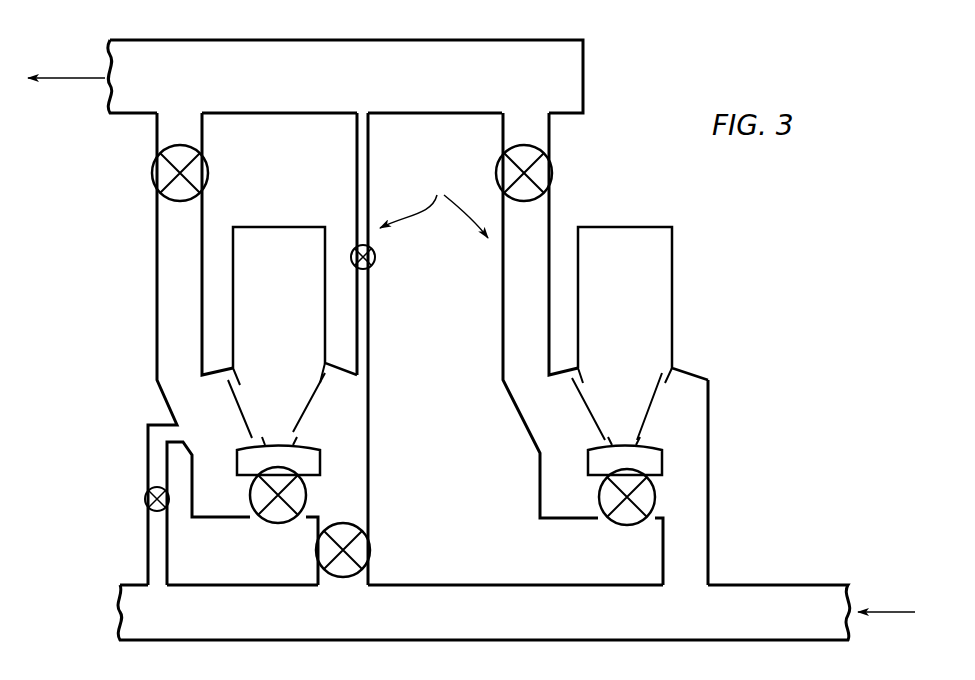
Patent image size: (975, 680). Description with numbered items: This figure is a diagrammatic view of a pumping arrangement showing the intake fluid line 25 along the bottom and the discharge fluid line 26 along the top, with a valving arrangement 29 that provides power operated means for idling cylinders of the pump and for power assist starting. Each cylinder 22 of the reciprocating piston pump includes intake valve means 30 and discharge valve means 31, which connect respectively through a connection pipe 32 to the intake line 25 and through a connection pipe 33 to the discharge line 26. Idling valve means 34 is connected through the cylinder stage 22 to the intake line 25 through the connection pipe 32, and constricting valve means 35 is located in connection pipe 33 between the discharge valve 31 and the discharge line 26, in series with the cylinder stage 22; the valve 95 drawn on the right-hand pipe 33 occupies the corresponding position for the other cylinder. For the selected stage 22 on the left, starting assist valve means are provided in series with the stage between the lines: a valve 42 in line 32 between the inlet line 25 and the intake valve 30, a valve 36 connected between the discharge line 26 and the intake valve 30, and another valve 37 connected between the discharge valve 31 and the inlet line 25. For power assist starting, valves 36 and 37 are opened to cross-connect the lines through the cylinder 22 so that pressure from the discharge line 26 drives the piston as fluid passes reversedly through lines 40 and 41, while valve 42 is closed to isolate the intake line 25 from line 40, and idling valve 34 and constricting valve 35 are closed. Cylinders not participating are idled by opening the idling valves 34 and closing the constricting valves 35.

The cylinder 22 is at (326, 236).
The intake fluid line 25 is at (803, 588).
The discharge fluid line 26 is at (436, 40).
The valving arrangement 29 is at (434, 201).
The intake valve means 30 is at (310, 400).
The discharge valve means 31 is at (232, 402).
The connection pipe 32 is at (369, 458).
The connection pipe 33 is at (157, 258).
The idling valve means 34 is at (307, 494).
The constricting valve means 35 is at (152, 180).
The valve 36 is at (375, 257).
The valve 37 is at (146, 494).
The line 40 is at (370, 320).
The line 41 is at (148, 548).
The valve 42 is at (372, 553).
The supply valve 95 is at (550, 166).